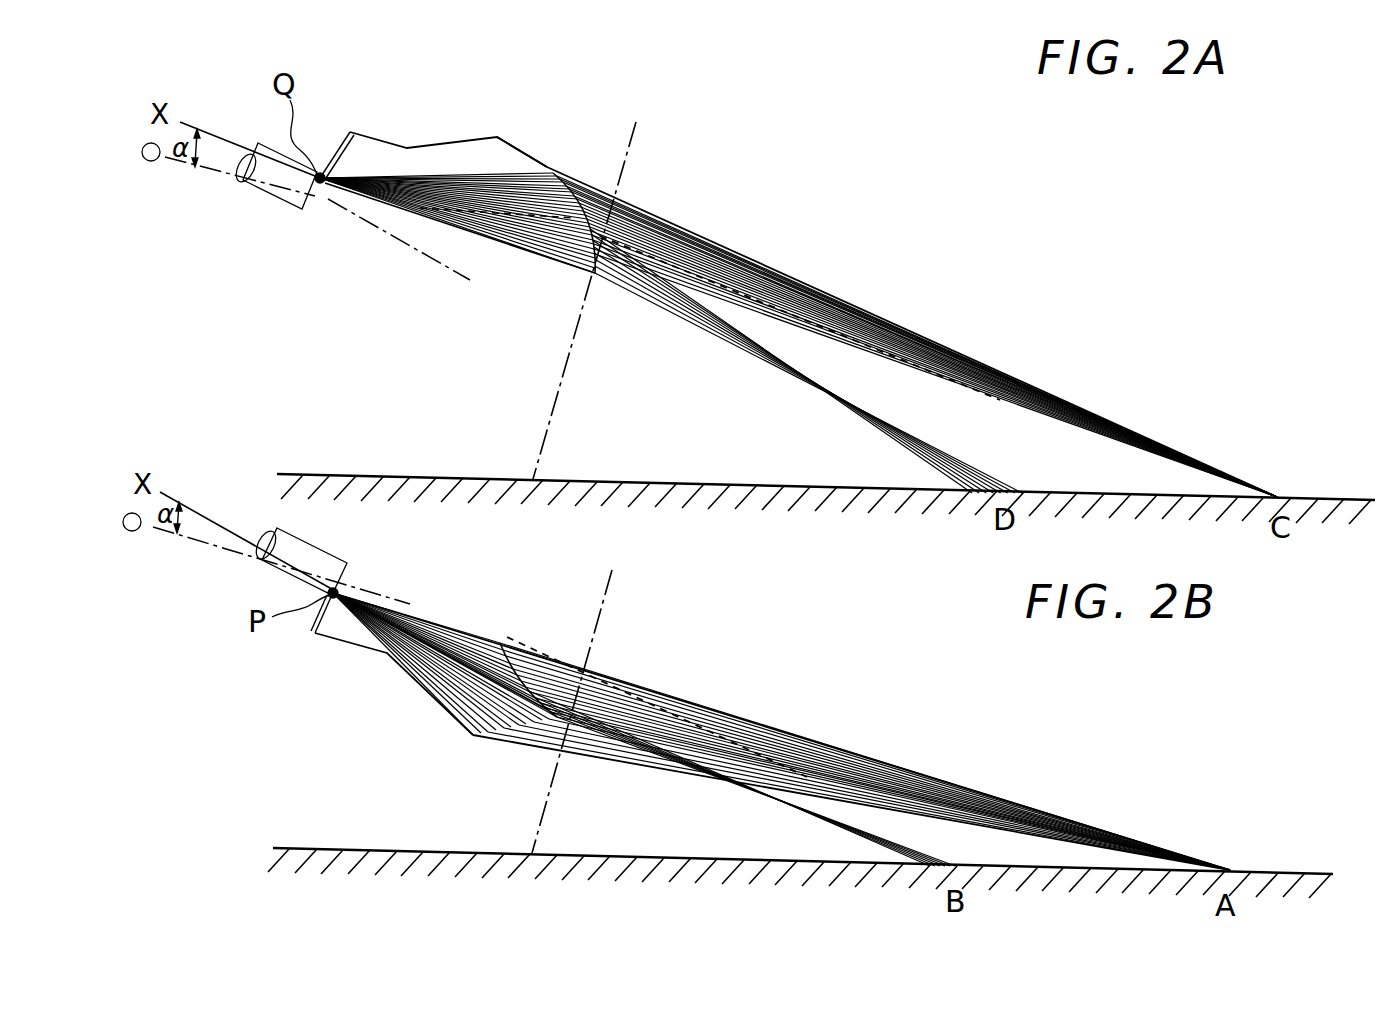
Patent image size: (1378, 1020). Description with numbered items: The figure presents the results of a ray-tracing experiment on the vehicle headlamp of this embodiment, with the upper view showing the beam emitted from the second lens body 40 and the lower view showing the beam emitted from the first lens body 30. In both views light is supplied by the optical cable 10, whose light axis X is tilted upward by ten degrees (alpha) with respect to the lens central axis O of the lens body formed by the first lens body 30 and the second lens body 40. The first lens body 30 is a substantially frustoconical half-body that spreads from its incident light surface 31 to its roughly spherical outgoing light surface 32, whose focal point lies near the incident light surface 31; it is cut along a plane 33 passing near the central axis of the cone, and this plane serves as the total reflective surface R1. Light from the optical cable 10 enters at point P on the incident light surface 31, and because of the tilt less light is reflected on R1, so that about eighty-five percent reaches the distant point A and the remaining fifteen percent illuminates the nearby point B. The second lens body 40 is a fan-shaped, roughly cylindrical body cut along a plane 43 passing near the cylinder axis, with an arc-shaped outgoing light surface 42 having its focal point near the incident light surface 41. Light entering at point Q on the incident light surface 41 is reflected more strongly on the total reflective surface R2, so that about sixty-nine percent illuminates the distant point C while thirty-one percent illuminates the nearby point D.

In FIG. 2A, the optical cable 10 is at (292, 200).
In FIG. 2B, the optical cable 10 is at (323, 556).
In FIG. 2B, the first lens body 30 is at (349, 641).
In FIG. 2B, the incident light surface 31 is at (318, 627).
In FIG. 2B, the outgoing light surface 32 is at (507, 740).
In FIG. 2B, the plane 33 is at (437, 617).
In FIG. 2A, the second lens body 40 is at (438, 152).
In FIG. 2A, the incident light surface 41 is at (329, 150).
In FIG. 2A, the outgoing light surface 42 is at (513, 142).
In FIG. 2A, the plane 43 is at (493, 248).